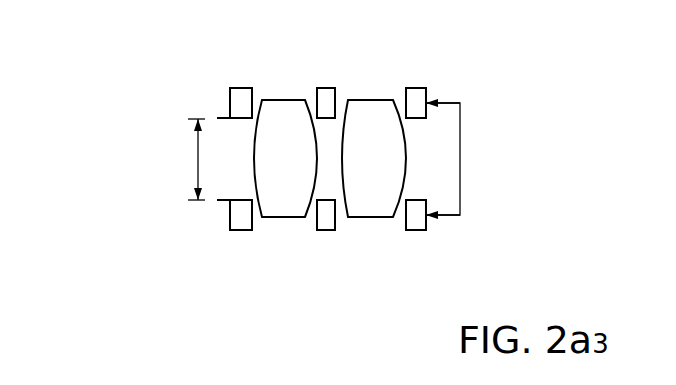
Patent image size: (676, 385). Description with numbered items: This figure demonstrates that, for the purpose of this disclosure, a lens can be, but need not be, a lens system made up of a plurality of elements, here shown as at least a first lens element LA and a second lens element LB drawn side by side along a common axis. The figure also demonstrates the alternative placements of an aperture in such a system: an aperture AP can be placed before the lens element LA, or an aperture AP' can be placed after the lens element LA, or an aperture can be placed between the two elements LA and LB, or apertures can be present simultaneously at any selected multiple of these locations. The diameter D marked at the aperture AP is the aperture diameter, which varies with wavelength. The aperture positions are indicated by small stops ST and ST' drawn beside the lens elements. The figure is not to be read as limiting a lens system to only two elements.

The stop ST is at (190, 167).
The stop ST' is at (284, 162).
The aperture AP is at (100, 164).
The aperture AP' is at (398, 262).
The aperture diameter D is at (206, 159).
The lens element LA is at (285, 158).
The lens element LB is at (374, 158).